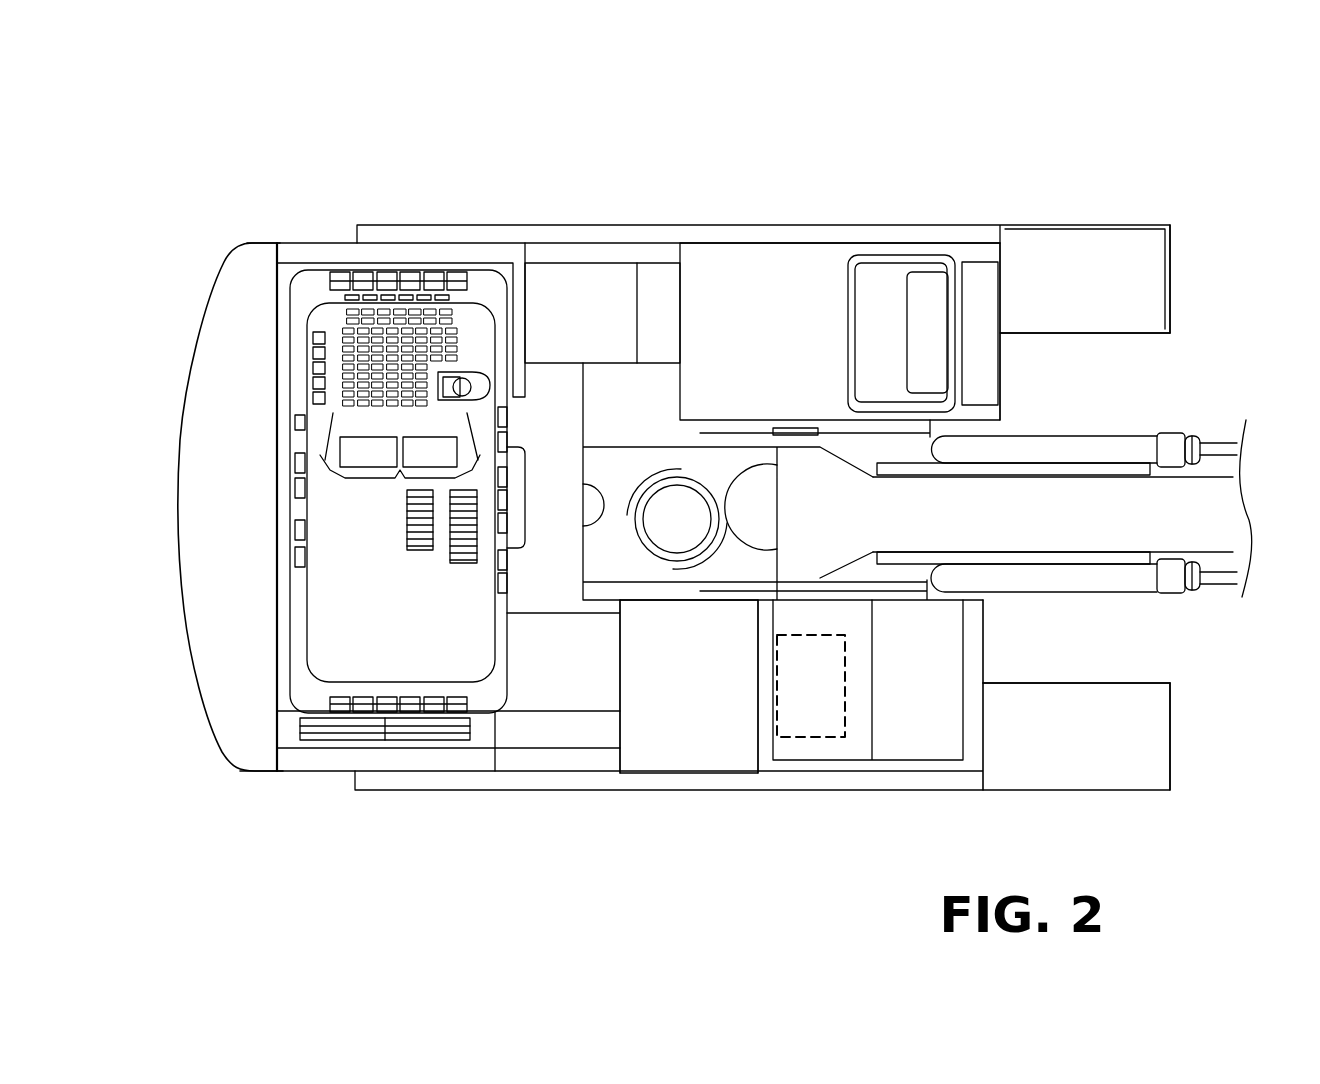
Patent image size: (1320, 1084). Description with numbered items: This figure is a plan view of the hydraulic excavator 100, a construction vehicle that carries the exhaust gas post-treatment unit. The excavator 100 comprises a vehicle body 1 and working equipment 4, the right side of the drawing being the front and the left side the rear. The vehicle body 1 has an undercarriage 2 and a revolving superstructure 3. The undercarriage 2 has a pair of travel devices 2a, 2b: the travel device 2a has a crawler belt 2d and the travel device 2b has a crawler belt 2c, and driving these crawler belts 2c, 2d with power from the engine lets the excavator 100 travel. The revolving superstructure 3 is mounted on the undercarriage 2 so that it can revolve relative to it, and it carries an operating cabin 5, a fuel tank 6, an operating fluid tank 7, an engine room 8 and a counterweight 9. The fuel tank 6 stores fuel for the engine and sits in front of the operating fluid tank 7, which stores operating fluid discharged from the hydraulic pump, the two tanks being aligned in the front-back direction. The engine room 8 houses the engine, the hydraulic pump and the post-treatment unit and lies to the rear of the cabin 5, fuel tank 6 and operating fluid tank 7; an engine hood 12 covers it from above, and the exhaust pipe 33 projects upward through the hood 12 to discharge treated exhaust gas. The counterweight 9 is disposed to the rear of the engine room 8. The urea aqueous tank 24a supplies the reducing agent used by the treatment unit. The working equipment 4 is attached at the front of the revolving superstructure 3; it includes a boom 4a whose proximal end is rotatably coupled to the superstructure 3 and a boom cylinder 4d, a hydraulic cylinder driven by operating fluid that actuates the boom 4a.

The vehicle body 1 is at (714, 197).
The hydraulic excavator 100 is at (957, 182).
The undercarriage 2 is at (1118, 213).
The travel device 2a is at (1172, 747).
The travel device 2b is at (1172, 272).
The crawler belt 2c is at (1042, 257).
The crawler belt 2d is at (1055, 705).
The revolving superstructure 3 is at (573, 243).
The working equipment 4 is at (1198, 412).
The boom 4a is at (1112, 510).
The boom cylinder 4d is at (1060, 447).
The operating cabin 5 is at (880, 287).
The fuel tank 6 is at (706, 752).
The operating fluid tank 7 is at (562, 690).
The engine room 8 is at (305, 233).
The counterweight 9 is at (240, 268).
The engine hood 12 is at (365, 568).
The urea aqueous tank 24a is at (818, 740).
The exhaust pipe 33 is at (462, 365).